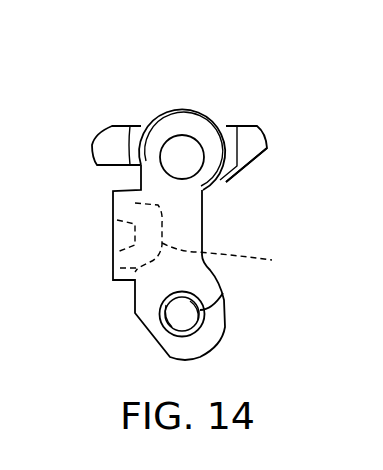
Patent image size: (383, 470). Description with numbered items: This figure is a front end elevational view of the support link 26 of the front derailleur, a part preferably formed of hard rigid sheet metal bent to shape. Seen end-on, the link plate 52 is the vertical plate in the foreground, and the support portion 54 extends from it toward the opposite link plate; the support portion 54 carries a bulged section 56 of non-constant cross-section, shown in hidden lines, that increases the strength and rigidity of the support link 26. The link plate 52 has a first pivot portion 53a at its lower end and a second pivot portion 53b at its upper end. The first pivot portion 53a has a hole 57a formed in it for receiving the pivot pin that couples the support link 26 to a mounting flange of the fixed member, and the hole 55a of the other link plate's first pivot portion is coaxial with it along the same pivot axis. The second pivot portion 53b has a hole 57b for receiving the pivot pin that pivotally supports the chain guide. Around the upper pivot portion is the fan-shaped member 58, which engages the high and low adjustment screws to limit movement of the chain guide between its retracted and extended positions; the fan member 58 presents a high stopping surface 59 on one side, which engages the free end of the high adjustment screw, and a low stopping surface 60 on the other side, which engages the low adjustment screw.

The support link 26 is at (216, 97).
The link plate 52 is at (203, 228).
The first pivot portion 53a is at (227, 320).
The second pivot portion 53b is at (207, 193).
The support portion 54 is at (110, 245).
The hole 55a is at (223, 293).
The bulged section 56 is at (233, 257).
The hole 57a is at (223, 293).
The hole 57b is at (180, 134).
The fan-shaped member 58 is at (268, 147).
The high stopping surface 59 is at (247, 127).
The low stopping surface 60 is at (105, 127).